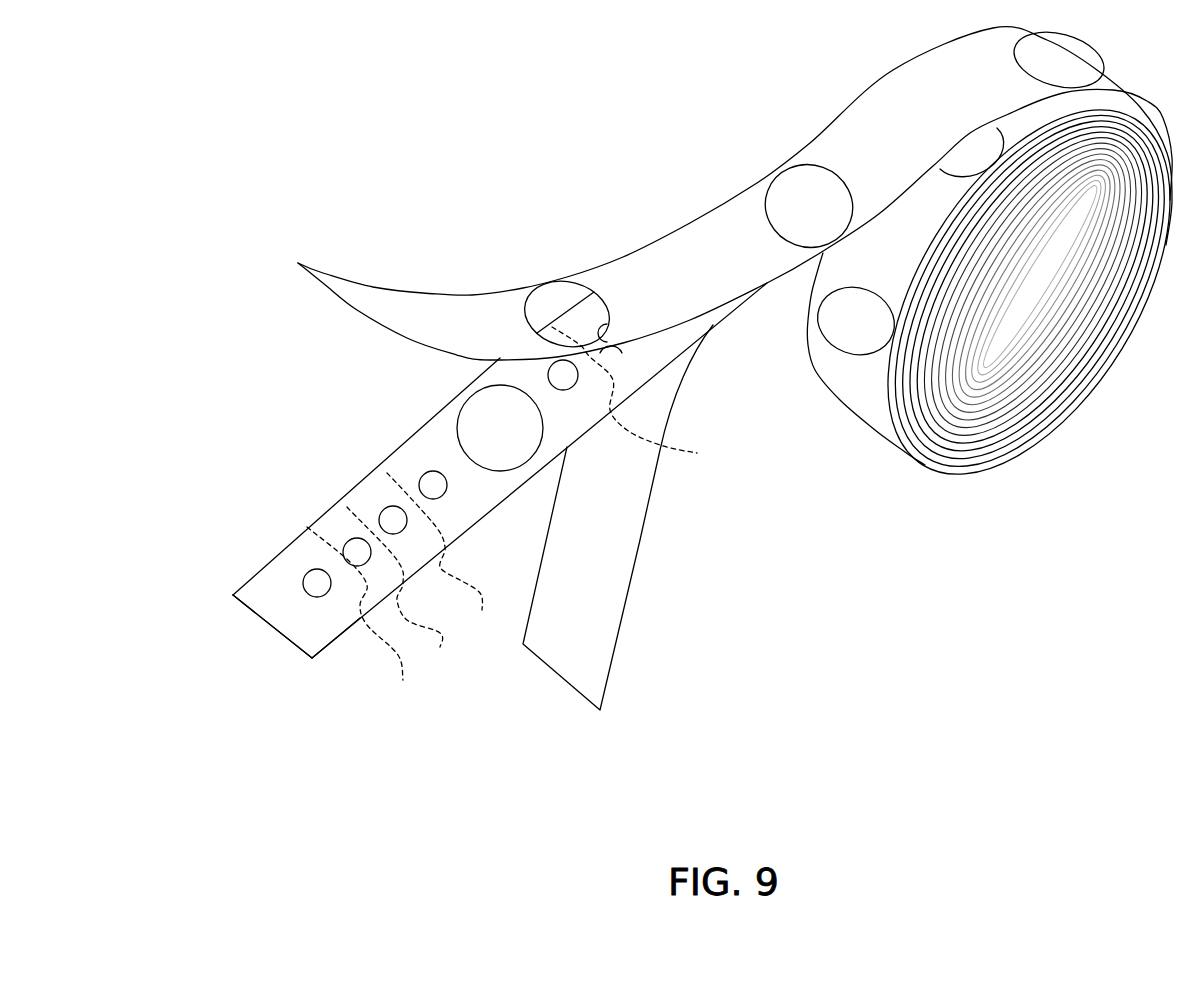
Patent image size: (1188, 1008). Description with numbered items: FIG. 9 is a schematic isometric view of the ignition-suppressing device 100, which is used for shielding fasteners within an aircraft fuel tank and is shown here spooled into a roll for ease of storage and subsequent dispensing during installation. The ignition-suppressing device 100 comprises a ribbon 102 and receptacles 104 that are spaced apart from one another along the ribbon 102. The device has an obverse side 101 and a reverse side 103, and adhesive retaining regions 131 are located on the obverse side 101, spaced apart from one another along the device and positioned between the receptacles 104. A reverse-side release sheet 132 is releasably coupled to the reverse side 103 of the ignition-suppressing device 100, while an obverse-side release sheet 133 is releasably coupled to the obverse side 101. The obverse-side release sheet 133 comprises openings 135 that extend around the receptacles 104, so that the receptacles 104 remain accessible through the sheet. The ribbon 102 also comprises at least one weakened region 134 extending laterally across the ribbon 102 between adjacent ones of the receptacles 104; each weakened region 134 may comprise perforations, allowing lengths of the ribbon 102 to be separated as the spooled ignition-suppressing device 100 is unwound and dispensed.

The ignition-suppressing device 100 is at (621, 140).
The obverse side 101 is at (500, 470).
The ribbon 102 is at (224, 553).
The reverse side 103 is at (328, 655).
The receptacles 104 is at (497, 537).
The adhesive retaining regions 131 is at (317, 583).
The reverse-side release sheet 132 is at (668, 612).
The obverse-side release sheet 133 is at (472, 290).
The weakened region 134 is at (519, 520).
The openings 135 is at (549, 283).